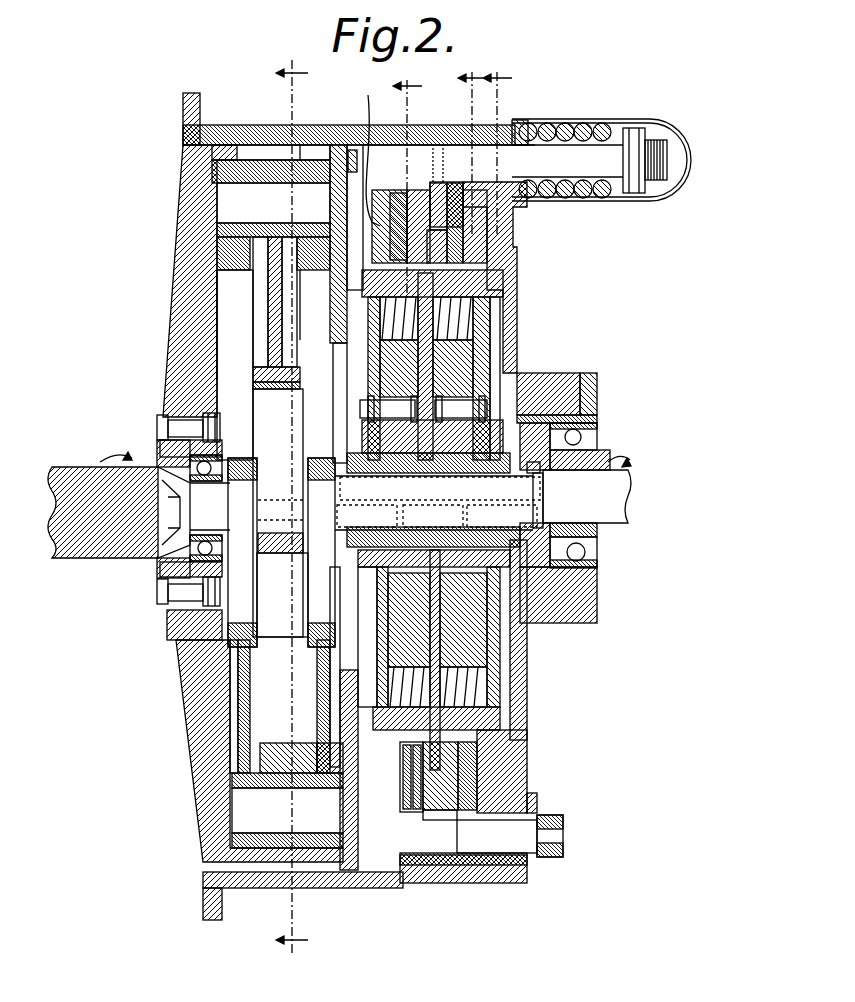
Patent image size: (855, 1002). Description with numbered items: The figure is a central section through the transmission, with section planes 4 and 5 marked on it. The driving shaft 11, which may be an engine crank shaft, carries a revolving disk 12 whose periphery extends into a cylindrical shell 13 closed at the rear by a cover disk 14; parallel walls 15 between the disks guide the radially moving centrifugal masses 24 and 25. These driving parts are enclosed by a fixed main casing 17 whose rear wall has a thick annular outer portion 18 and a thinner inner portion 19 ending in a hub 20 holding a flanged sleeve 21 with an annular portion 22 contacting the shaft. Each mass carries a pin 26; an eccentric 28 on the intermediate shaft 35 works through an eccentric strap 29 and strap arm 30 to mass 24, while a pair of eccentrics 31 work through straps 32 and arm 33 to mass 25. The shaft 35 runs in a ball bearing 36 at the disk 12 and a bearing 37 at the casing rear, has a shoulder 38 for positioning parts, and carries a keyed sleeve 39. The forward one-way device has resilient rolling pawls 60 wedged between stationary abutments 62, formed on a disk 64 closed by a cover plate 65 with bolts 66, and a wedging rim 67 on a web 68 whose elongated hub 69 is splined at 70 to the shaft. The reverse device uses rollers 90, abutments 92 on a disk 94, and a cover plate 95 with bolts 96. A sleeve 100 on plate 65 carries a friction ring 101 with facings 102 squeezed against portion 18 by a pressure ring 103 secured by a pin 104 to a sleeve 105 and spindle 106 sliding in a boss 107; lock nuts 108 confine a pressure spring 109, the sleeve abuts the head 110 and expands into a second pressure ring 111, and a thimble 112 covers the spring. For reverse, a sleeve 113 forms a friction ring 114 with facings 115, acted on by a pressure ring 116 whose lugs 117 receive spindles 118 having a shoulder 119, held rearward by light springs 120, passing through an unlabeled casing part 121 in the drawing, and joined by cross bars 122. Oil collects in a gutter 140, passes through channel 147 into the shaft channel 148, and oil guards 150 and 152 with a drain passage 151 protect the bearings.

The section line 4- 4 is at (292, 507).
The section line 5- 5 is at (452, 174).
The power or driving shaft 11 is at (72, 470).
The revolving support or disk 12 is at (190, 292).
The cylindrical wall or shell 13 is at (222, 142).
The cover or disk 14 is at (330, 285).
The parallel walls 15 is at (262, 453).
The fixed outer or main casing 17 is at (257, 890).
The annular outer portion 18 is at (488, 223).
The annular inner portion 19 is at (517, 273).
The cylindrical hub or boss 20 is at (595, 382).
The flanged sleeve 21 is at (597, 415).
The annular portion 22 is at (597, 393).
The centrifugal mass 24 is at (233, 245).
The centrifugal mass 25 is at (283, 758).
The pin or stud 26 is at (187, 822).
The eccentric 28 is at (278, 513).
The eccentric strap 29 is at (267, 370).
The strap arm 30 is at (270, 303).
The eccentrics 31 is at (281, 552).
The straps 32 is at (240, 648).
The arm 33 is at (243, 687).
The intermediate shaft 35 is at (625, 487).
The ball bearing 36 is at (200, 548).
The bearing 37 is at (597, 567).
The shoulder 38 is at (545, 488).
The sleeve 39 is at (610, 457).
The rolling pawls or grippers 60 is at (467, 313).
The stationary wedging abutments 62 is at (455, 347).
The disk 64 is at (477, 410).
The cover plate 65 is at (457, 388).
The bolts 66 is at (527, 395).
The wedging rim 67 is at (467, 273).
The web 68 is at (433, 710).
The elongated hub 69 is at (458, 463).
The spline 70 is at (353, 473).
The resilient rollers or resilient pawls 90 is at (440, 690).
The inclined abutments 92 is at (408, 647).
The disk 94 is at (413, 617).
The cover plate 95 is at (380, 640).
The bolts 96 is at (362, 410).
The cylindrical sleeve 100 is at (518, 253).
The annular plate or friction ring 101 is at (447, 183).
The facings 102 is at (478, 182).
The pressure ring 103 is at (453, 778).
The pin 104 is at (435, 123).
The sleeve 105 is at (387, 123).
The spindle 106 is at (567, 161).
The boss 107 is at (512, 122).
The lock nuts 108 is at (628, 142).
The pressure spring 109 is at (585, 125).
The flange or head 110 is at (362, 148).
The second friction pressure ring 111 is at (382, 873).
The enclosing thimble 112 is at (672, 200).
The sleeve 113 is at (377, 720).
The friction ring 114 is at (405, 860).
The friction facings 115 is at (413, 870).
The pressure ring 116 is at (450, 837).
The sleeves or lugs 117 is at (440, 873).
The spindles 118 is at (450, 840).
The shoulder 119 is at (470, 838).
The light spring 120 is at (430, 807).
The boss 121 is at (535, 805).
The cross bars 122 is at (565, 822).
The circumferential recess or gutter 140 is at (315, 126).
The channel 147 is at (530, 470).
The shaft channel 148 is at (477, 515).
The oil guard 150 is at (597, 553).
The outwardly inclined passage 151 is at (533, 570).
The oil guard 152 is at (223, 450).